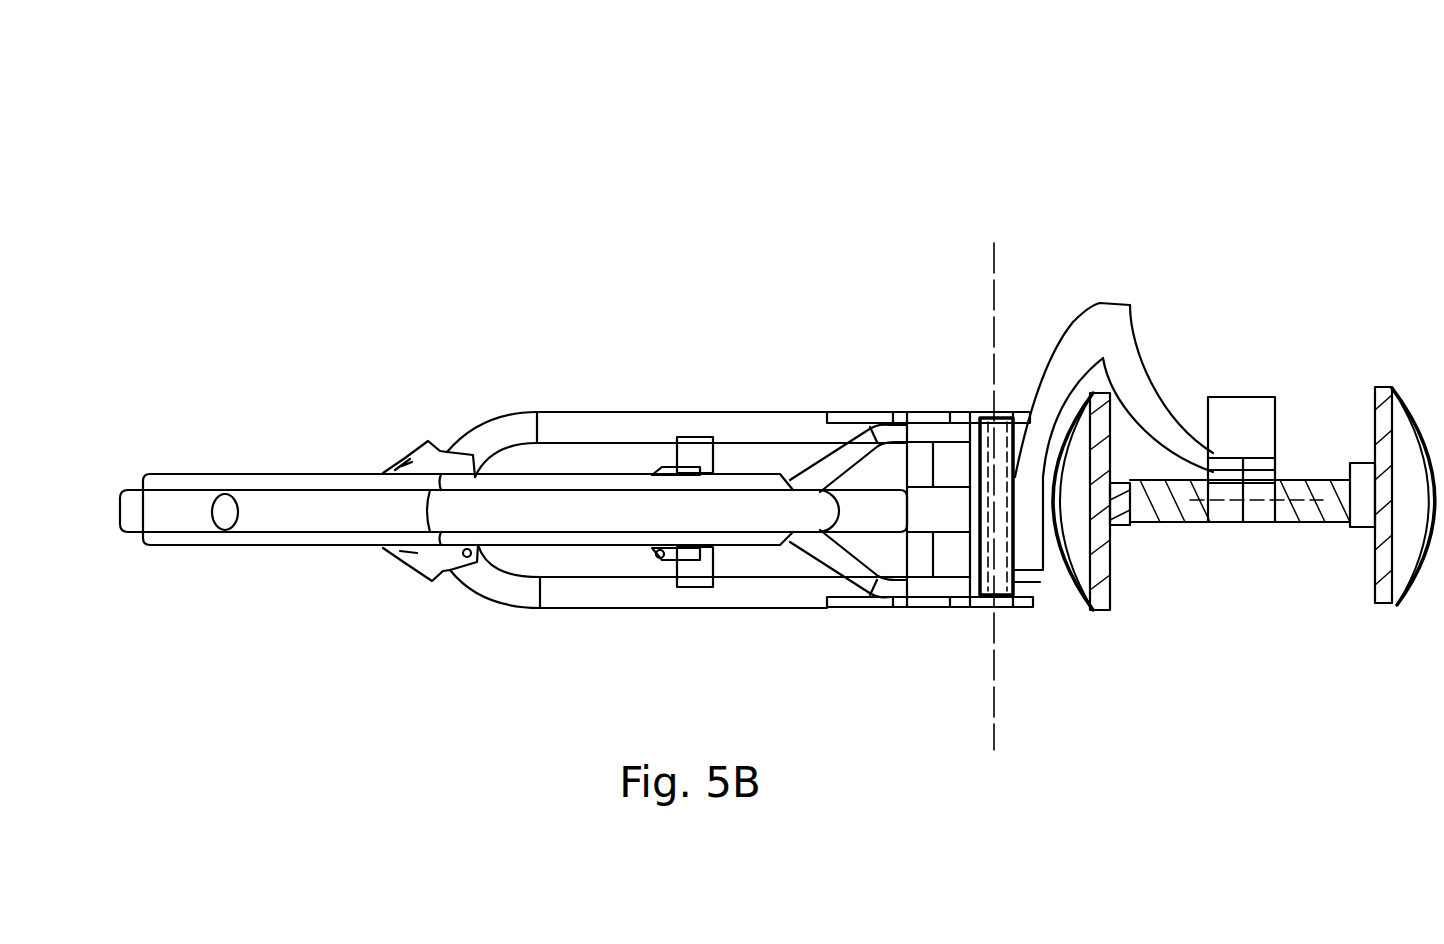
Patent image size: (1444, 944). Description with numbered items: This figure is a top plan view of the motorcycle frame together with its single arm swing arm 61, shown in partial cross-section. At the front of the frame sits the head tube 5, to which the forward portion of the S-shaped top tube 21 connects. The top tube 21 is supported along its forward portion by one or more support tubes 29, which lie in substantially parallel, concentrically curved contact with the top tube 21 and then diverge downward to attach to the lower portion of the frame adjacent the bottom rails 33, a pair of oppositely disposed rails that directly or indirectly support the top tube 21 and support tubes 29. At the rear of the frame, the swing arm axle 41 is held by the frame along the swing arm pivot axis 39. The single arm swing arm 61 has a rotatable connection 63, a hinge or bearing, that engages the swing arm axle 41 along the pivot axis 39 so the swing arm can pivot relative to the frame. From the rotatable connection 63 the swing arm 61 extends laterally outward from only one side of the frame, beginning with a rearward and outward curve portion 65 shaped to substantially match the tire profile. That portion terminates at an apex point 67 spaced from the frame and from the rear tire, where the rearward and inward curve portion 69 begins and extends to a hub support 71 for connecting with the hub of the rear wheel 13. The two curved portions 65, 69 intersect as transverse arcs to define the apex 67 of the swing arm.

The head tube 5 is at (185, 510).
The rear wheel 13 is at (1378, 388).
The top tube 21 is at (343, 512).
The support tubes 29 is at (313, 480).
The bottom rails 33 is at (615, 423).
The swing arm pivot axis 39 is at (995, 260).
The swing arm axle 41 is at (986, 415).
The single arm swing arm 61 is at (1073, 277).
The rotatable connection 63 is at (1015, 582).
The rearward and outward curve portion 65 is at (1073, 322).
The apex point 67 is at (1100, 318).
The rearward and inward curve portion 69 is at (1133, 387).
The hub support 71 is at (1268, 415).